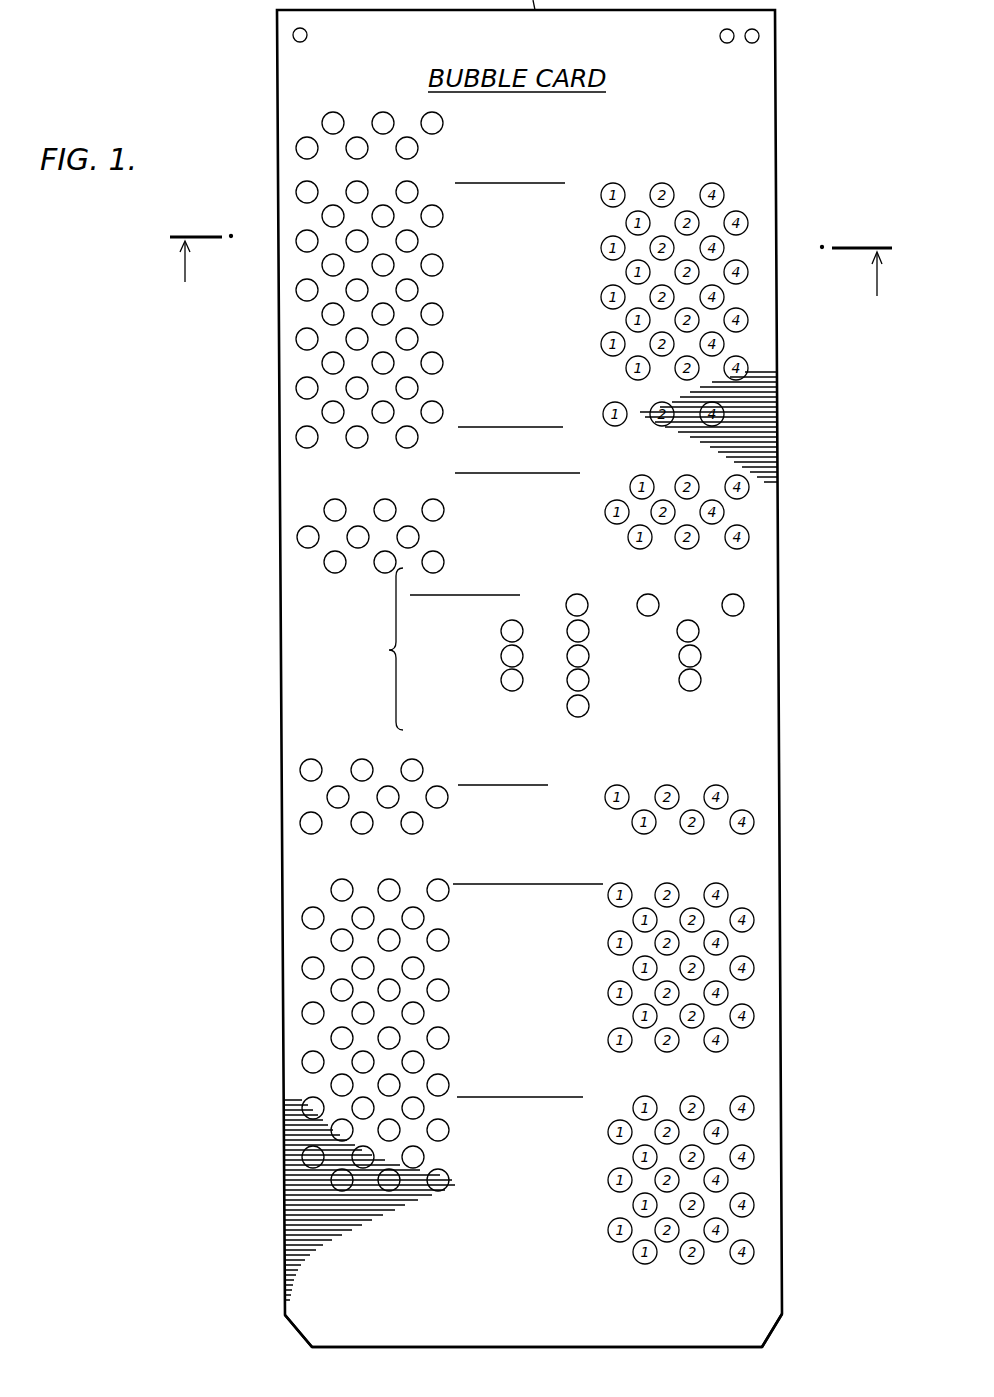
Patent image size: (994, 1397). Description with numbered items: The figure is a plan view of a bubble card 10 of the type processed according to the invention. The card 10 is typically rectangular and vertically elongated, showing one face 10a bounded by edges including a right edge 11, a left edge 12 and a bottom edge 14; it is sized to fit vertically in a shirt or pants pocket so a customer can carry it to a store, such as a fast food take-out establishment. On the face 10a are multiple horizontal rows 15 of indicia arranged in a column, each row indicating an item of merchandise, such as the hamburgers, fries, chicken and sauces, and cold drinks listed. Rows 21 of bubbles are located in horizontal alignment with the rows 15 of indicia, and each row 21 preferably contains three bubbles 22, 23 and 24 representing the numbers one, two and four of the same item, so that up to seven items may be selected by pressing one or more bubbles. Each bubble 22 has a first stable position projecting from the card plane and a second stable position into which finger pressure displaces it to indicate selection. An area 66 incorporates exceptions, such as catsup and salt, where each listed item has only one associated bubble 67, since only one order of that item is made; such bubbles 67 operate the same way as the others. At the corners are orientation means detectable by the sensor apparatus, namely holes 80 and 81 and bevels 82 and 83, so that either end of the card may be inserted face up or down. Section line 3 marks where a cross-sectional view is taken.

The card 10 is at (238, 493).
The face of the card 10a is at (278, 393).
The edge of the card 11 is at (778, 455).
The edge of the card 12 is at (280, 877).
The edge of the card 14 is at (455, 1350).
The horizontal rows of indicia 15 is at (450, 222).
The rows of bubbles 21 is at (742, 189).
The bubble 22 is at (612, 183).
The bubble 23 is at (662, 183).
The bubble 24 is at (712, 183).
The exceptions area 66 is at (516, 649).
The exception bubble 67 is at (745, 605).
The hole 80 is at (294, 33).
The hole 81 is at (760, 37).
The bevel 82 is at (776, 1322).
The bevel 83 is at (295, 1332).
The section line 3- 3 is at (531, 283).